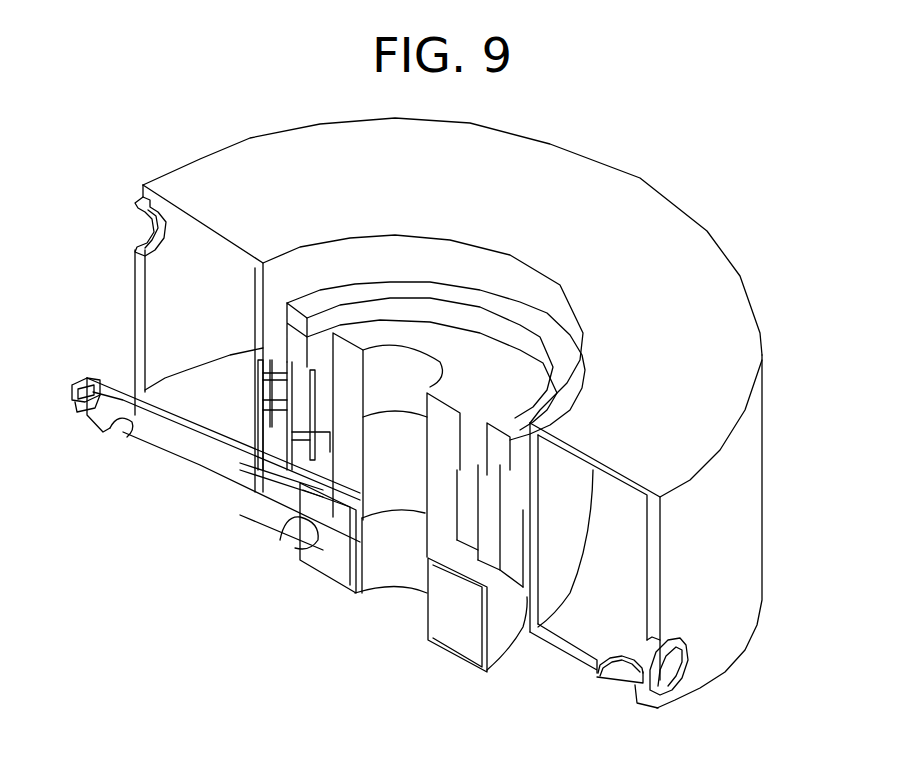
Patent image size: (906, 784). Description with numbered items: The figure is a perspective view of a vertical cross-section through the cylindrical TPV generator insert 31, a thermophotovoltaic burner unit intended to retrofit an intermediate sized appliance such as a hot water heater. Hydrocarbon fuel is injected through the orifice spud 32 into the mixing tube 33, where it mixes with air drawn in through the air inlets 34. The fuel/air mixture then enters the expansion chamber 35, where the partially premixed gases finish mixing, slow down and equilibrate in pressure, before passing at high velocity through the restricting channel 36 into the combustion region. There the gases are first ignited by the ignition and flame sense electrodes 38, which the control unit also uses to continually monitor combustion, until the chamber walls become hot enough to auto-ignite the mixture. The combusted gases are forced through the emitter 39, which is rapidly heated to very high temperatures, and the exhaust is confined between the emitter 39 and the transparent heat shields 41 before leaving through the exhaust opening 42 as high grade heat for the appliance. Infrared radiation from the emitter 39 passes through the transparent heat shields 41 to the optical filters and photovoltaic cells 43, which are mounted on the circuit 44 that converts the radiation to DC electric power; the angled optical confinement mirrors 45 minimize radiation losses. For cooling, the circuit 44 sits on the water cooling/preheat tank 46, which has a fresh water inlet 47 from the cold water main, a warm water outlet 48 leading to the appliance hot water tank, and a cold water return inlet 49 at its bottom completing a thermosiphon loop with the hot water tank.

The cylindrical TPV generator insert 31 is at (112, 700).
The orifice spud 32 is at (80, 403).
The mixing tube 33 is at (233, 493).
The air inlets 34 is at (118, 437).
The expansion chamber 35 is at (458, 632).
The restricting channel 36 is at (300, 517).
The ignition and flame sense electrodes 38 is at (367, 476).
The emitter 39 is at (302, 447).
The transparent heat shields 41 is at (518, 528).
The exhaust opening 42 is at (503, 347).
The optical filters and photovoltaic cells 43 is at (277, 407).
The circuit 44 is at (283, 428).
The angled optical confinement mirrors 45 is at (300, 435).
The water cooling/preheat tank 46 is at (730, 493).
The fresh water inlet 47 is at (617, 687).
The warm water outlet 48 is at (142, 225).
The cold water return inlet 49 is at (665, 668).